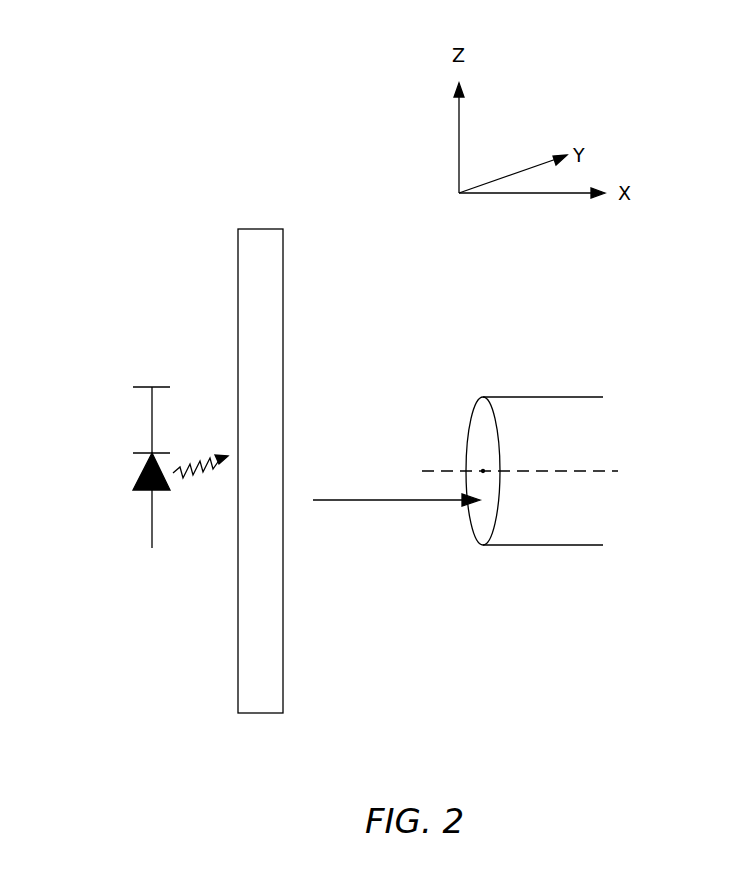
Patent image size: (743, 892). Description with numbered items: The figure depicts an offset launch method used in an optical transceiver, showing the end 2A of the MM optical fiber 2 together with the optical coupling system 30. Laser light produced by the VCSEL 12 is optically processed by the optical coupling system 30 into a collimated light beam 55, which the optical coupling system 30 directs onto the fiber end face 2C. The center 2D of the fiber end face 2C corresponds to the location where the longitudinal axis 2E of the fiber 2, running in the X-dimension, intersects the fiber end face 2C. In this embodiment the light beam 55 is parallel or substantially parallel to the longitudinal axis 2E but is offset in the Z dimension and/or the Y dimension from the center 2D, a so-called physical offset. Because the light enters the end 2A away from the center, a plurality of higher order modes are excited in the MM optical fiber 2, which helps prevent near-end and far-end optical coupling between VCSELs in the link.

The MM optical fiber 2 is at (552, 484).
The end of the fiber 2A is at (492, 547).
The fiber end face 2C is at (485, 517).
The center of the fiber end face 2D is at (483, 470).
The longitudinal axis of the fiber 2E is at (593, 472).
The VCSEL 12 is at (138, 477).
The optical coupling system 30 is at (260, 229).
The collimated light beam 55 is at (390, 498).